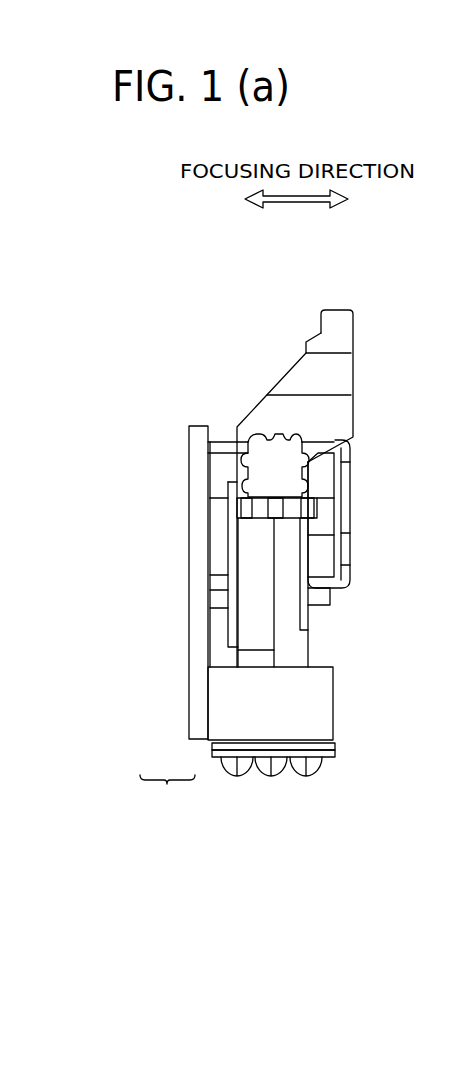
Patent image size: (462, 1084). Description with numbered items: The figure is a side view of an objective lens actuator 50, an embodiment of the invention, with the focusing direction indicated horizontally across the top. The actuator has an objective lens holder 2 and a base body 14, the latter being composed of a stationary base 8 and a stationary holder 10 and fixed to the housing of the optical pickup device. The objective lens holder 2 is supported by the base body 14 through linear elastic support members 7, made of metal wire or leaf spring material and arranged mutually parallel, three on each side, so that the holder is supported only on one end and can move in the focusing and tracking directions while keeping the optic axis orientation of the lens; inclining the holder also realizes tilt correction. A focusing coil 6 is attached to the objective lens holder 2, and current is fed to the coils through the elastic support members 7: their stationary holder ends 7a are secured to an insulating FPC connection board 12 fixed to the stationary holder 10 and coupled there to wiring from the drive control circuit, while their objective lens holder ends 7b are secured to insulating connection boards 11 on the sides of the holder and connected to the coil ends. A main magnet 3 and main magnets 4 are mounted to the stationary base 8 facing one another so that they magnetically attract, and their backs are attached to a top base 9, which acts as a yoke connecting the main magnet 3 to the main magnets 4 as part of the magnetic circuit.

The objective lens holder 2 is at (337, 310).
The main magnet 3 is at (215, 463).
The main magnets 4 is at (217, 550).
The focusing coil 6 is at (293, 613).
The elastic support members 7 is at (312, 633).
The stationary holder ends 7a is at (243, 778).
The objective lens holder ends 7b is at (240, 506).
The stationary base 8 is at (187, 727).
The top base 9 is at (350, 456).
The stationary holder 10 is at (212, 732).
The connection boards 11 is at (255, 443).
The FPC connection board 12 is at (327, 757).
The base body 14 is at (167, 793).
The objective lens actuator 50 is at (385, 284).